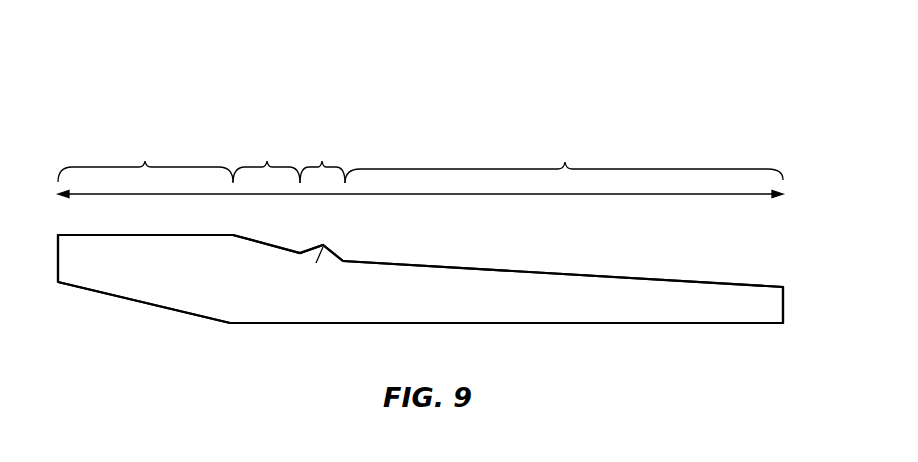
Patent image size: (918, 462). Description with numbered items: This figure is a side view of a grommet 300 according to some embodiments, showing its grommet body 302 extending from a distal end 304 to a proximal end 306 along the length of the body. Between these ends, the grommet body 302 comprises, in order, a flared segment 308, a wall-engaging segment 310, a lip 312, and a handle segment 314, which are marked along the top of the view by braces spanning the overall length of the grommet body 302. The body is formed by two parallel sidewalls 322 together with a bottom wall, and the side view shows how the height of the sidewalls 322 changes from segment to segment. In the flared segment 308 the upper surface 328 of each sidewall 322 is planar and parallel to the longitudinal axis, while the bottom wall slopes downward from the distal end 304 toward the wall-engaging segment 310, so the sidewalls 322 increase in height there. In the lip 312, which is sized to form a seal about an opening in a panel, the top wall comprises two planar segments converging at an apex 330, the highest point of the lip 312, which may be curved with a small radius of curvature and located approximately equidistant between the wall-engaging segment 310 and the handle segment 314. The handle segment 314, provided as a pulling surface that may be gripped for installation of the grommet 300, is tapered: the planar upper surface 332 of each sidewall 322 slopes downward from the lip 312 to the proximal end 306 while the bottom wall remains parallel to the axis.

The grommet 300 is at (478, 89).
The grommet body 302 is at (458, 195).
The distal end 304 is at (57, 270).
The proximal end 306 is at (785, 304).
The flared segment 308 is at (145, 161).
The wall-engaging segment 310 is at (266, 162).
The lip 312 is at (322, 162).
The handle segment 314 is at (564, 162).
The sidewall 322 is at (168, 278).
The upper surface 328 is at (108, 235).
The apex 330 is at (319, 252).
The upper surface 332 is at (645, 277).